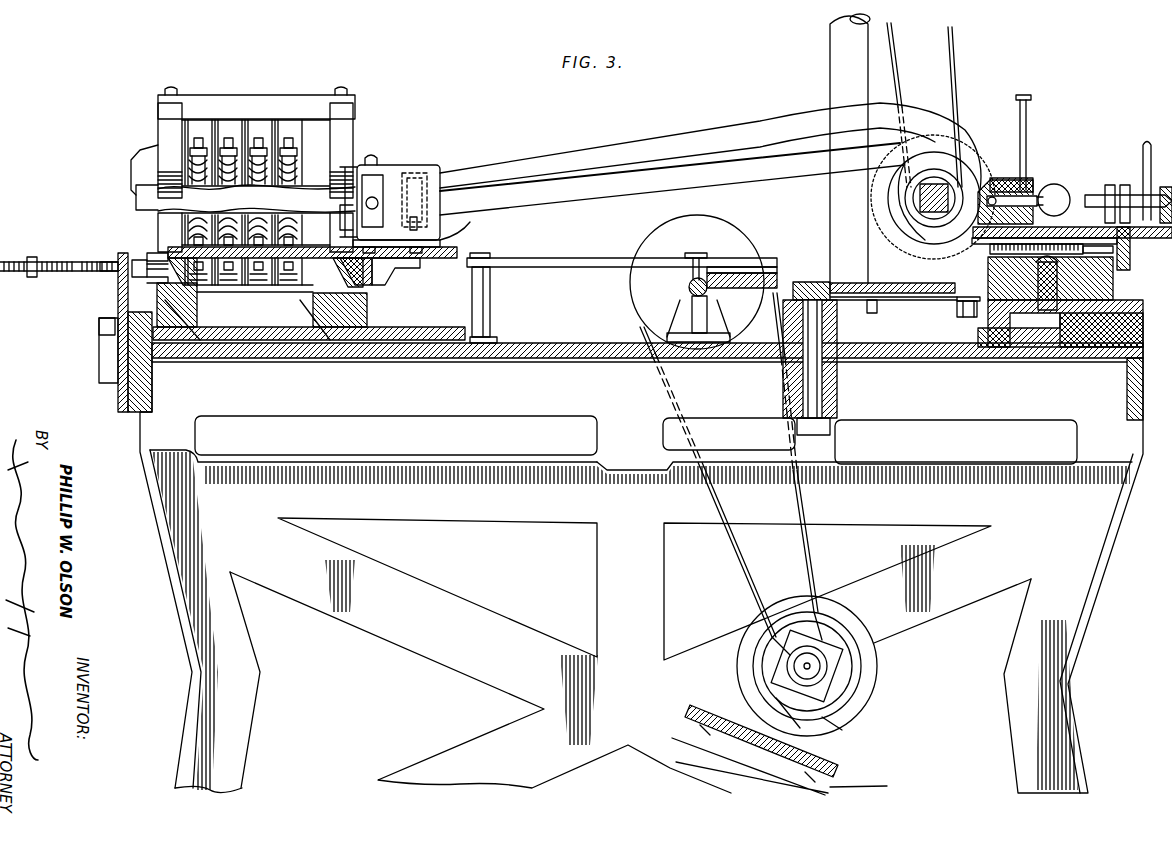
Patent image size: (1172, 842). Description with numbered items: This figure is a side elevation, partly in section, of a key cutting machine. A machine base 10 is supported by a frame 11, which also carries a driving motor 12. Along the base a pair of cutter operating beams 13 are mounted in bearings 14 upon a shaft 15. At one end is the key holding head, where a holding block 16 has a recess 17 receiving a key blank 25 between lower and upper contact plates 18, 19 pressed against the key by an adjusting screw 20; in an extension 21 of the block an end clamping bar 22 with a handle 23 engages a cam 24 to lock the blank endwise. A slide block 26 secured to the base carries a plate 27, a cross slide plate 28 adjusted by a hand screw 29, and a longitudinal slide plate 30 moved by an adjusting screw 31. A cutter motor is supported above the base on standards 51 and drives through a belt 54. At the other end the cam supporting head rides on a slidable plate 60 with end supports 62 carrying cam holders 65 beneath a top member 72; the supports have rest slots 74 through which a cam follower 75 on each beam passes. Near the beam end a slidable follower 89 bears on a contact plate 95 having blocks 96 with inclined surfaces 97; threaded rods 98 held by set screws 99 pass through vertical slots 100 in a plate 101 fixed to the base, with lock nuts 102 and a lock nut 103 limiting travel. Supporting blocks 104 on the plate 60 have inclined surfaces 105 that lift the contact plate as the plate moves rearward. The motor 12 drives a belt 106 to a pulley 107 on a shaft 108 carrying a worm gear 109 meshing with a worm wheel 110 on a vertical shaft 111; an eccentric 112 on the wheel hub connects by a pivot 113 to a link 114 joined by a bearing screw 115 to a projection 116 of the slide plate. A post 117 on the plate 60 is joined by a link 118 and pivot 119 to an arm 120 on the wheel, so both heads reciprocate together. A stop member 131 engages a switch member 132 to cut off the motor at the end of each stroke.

The machine base 10 is at (555, 344).
The frame 11 is at (451, 511).
The driving motor 12 is at (857, 664).
The cutter operating beams 13 is at (618, 150).
The bearings 14 is at (890, 283).
The shaft 15 is at (917, 198).
The holding block 16 is at (993, 182).
The recess 17 is at (983, 183).
The lower contact plate 18 is at (970, 228).
The upper contact plate 19 is at (1034, 192).
The adjusting screw 20 is at (1026, 98).
The extension 21 is at (1131, 268).
The end clamping bar 22 is at (1090, 199).
The handle 23 is at (1150, 150).
The cam 24 is at (1127, 190).
The key blank 25 is at (1058, 190).
The slide block 26 is at (1090, 340).
The plate 27 is at (1002, 318).
The slide plate 28 is at (1110, 287).
The hand screw 29 is at (1057, 283).
The longitudinal slide plate 30 is at (1130, 238).
The adjusting screw 31 is at (1130, 275).
The standards 51 is at (830, 69).
The belt 54 is at (955, 52).
The plate 60 is at (430, 327).
The end supports 62 is at (162, 112).
The cam holders 65 is at (231, 130).
The top bar 72 is at (290, 108).
The rest slots 74 is at (150, 197).
The cam follower 75 is at (376, 200).
The slidable follower 89 is at (440, 240).
The contact plate 95 is at (458, 256).
The blocks 96 is at (190, 270).
The inclined surfaces 97 is at (222, 272).
The threaded rods 98 is at (60, 262).
The set screws 99 is at (132, 273).
The vertical slots 100 is at (112, 300).
The plate 101 is at (120, 262).
The lock nuts 102 is at (158, 262).
The lock nut 103 is at (32, 257).
The supporting blocks 104 is at (172, 345).
The inclined surface 105 is at (100, 328).
The belt 106 is at (722, 537).
The pulley 107 is at (656, 238).
The shaft 108 is at (688, 288).
The worm gear 109 is at (713, 298).
The worm wheel 110 is at (768, 278).
The vertical shaft 111 is at (837, 360).
The eccentric 112 is at (826, 282).
The pivot 113 is at (873, 313).
The link 114 is at (928, 362).
The bearing screw 115 is at (958, 297).
The projection 116 is at (958, 320).
The post 117 is at (490, 297).
The link 118 is at (536, 258).
The pivot 119 is at (697, 256).
The arm 120 is at (755, 267).
The adjustable stop member 131 is at (143, 333).
The switch member 132 is at (98, 340).